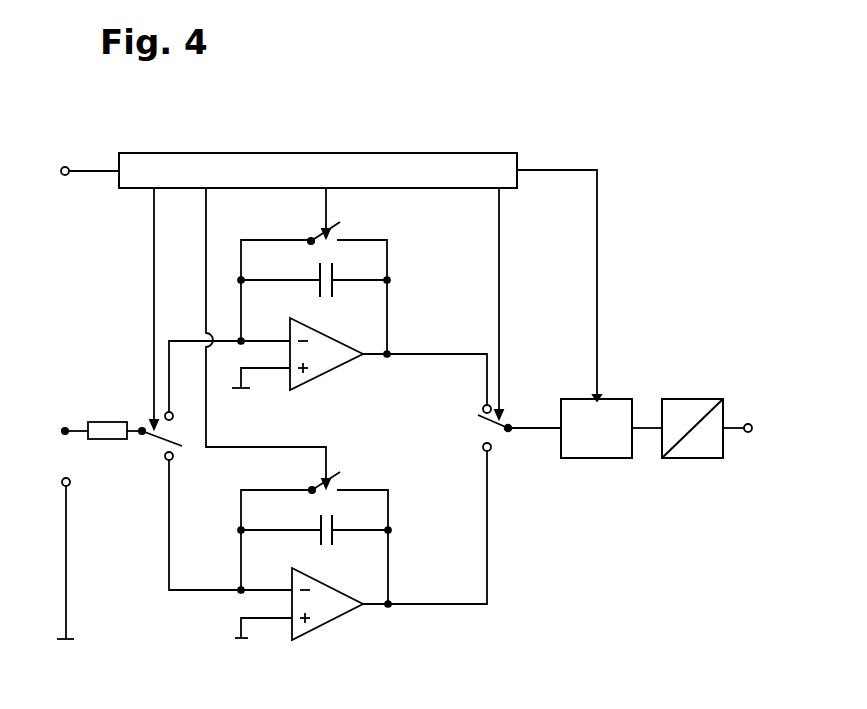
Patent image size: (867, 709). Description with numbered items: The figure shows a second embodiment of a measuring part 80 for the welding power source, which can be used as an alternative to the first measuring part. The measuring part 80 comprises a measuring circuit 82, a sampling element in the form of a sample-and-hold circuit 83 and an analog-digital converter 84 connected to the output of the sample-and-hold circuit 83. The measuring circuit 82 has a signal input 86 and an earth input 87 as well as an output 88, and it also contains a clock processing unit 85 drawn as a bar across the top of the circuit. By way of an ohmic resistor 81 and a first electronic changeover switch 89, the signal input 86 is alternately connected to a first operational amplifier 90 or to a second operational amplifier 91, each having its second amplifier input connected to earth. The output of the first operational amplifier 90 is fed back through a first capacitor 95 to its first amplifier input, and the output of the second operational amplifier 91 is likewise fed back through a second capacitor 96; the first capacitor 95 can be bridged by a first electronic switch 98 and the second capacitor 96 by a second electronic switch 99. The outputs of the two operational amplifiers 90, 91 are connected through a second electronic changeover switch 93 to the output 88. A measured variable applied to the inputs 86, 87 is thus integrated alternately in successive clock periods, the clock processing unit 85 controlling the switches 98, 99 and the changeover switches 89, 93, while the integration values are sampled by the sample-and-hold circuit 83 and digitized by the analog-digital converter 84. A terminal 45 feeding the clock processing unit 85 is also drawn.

The input terminal 45 is at (65, 166).
The measuring part 80 is at (440, 137).
The clock processing unit 85 is at (327, 170).
The first electronic switch 98 is at (345, 228).
The first capacitor 95 is at (333, 288).
The first operational amplifier 90 is at (330, 357).
The signal input 86 is at (65, 427).
The ohmic resistor 81 is at (112, 426).
The first electronic changeover switch 89 is at (152, 451).
The earth input 87 is at (62, 482).
The second electronic switch 99 is at (350, 479).
The second capacitor 96 is at (334, 540).
The second operational amplifier 91 is at (332, 608).
The second electronic changeover switch 93 is at (475, 423).
The output 88 is at (512, 423).
The sample-and-hold circuit 83 is at (597, 445).
The analog-digital converter 84 is at (703, 445).
The measuring circuit 82 is at (515, 522).